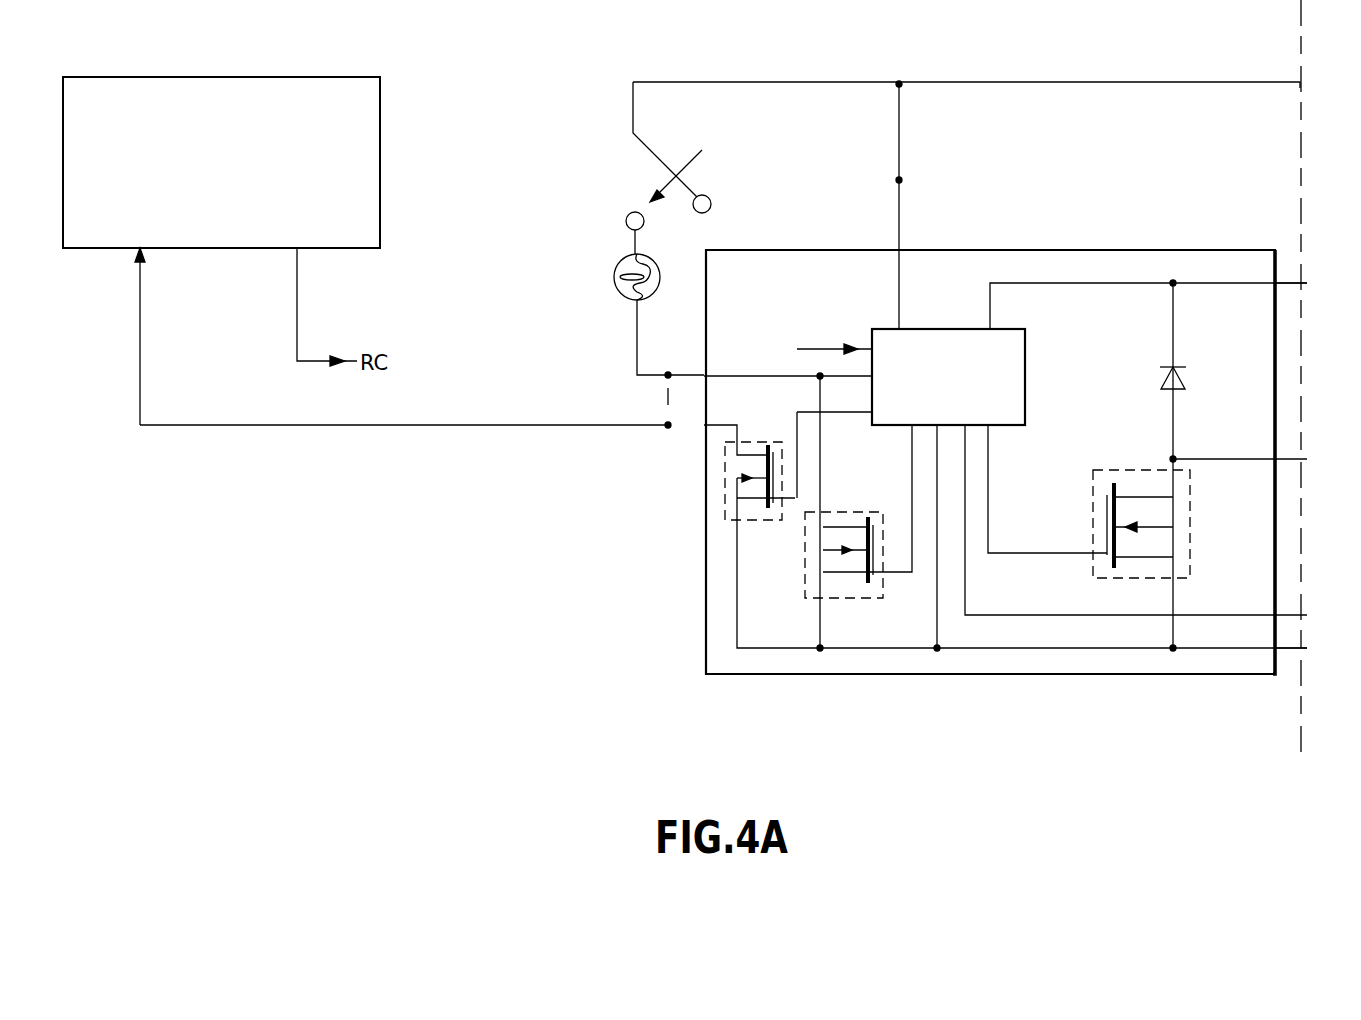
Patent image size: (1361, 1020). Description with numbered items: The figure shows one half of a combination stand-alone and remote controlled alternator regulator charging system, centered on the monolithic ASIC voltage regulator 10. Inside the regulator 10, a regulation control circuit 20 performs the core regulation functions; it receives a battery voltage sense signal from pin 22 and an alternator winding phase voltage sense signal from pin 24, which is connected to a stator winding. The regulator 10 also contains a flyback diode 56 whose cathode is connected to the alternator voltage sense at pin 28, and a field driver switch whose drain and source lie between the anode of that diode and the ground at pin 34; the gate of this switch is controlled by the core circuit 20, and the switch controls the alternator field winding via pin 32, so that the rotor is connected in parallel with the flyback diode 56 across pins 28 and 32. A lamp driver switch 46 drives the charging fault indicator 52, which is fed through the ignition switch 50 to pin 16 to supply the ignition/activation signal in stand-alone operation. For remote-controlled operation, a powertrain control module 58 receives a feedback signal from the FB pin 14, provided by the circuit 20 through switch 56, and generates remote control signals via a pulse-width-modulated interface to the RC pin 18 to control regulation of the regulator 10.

The monolithic ASIC voltage regulator 10 is at (706, 566).
The feedback pin 14 is at (704, 440).
The ignition/activation pin 16 is at (667, 383).
The remote control pin 18 is at (825, 345).
The regulation control circuit 20 is at (925, 329).
The battery voltage sense pin 22 is at (900, 250).
The phase voltage sense pin 24 is at (1280, 615).
The alternator voltage sense pin 28 is at (1275, 283).
The field pin 32 is at (1277, 463).
The ground pin 34 is at (1280, 650).
The lamp driver switch 46 is at (855, 600).
The ignition switch 50 is at (640, 168).
The charging fault indicator 52 is at (632, 302).
The flyback diode / switch 56 is at (757, 523).
The powertrain control module 58 is at (220, 77).